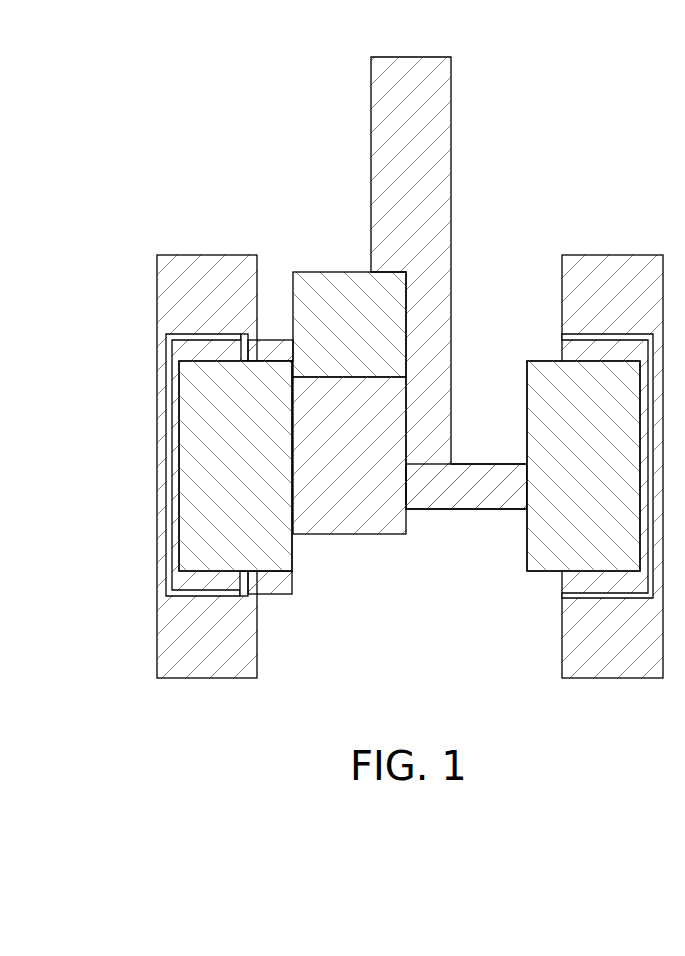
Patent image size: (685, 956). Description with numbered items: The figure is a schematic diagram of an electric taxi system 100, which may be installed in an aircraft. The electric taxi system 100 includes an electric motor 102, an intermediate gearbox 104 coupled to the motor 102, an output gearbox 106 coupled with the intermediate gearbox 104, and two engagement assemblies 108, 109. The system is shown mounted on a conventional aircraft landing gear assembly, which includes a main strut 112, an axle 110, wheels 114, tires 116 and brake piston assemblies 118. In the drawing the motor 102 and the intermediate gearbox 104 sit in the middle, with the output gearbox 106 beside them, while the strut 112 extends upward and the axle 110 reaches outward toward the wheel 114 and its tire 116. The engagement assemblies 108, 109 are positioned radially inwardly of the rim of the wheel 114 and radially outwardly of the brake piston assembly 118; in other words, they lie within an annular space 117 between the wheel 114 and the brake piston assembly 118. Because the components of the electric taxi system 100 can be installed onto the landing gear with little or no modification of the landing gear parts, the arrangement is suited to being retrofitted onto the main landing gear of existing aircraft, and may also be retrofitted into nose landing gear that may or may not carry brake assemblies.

The electric taxi system 100 is at (298, 259).
The electric motor 102 is at (345, 270).
The intermediate gearbox 104 is at (360, 527).
The output gearbox 106 is at (285, 594).
The engagement assembly 108 is at (245, 350).
The engagement assembly 109 is at (243, 590).
The axle 110 is at (478, 463).
The main strut 112 is at (452, 133).
The wheel 114 is at (157, 428).
The tire 116 is at (157, 278).
The annular space 117 is at (166, 361).
The brake piston assembly 118 is at (185, 519).